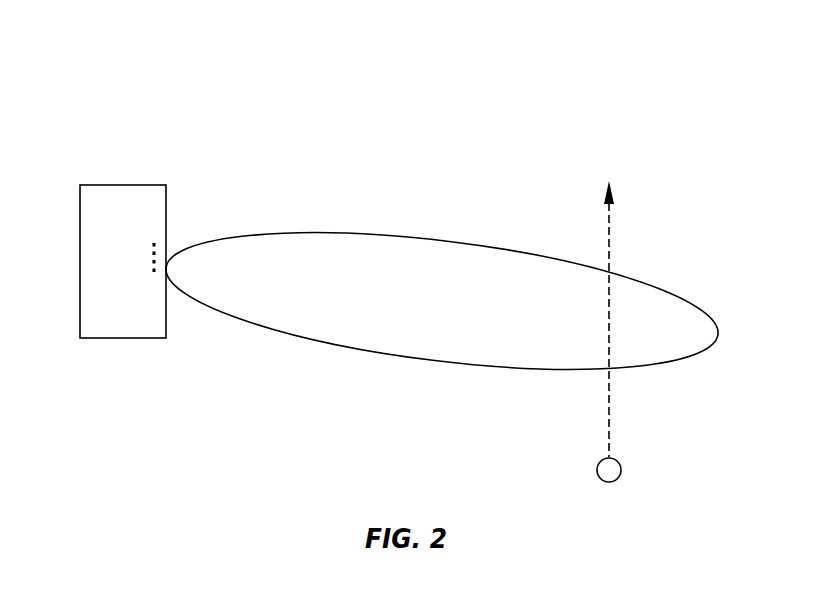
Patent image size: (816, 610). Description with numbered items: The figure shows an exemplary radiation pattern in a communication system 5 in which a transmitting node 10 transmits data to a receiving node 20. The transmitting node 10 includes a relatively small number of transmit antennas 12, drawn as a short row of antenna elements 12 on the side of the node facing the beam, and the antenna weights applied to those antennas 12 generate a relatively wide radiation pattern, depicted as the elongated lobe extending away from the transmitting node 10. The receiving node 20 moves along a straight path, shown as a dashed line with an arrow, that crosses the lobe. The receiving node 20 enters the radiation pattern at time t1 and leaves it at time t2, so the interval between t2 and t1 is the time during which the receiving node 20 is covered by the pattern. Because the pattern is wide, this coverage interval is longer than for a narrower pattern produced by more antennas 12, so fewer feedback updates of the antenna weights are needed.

The communication system 5 is at (527, 93).
The transmitting node 10 is at (104, 268).
The transmit antennas 12 is at (154, 244).
The receiving node 20 is at (617, 479).
The time t1 is at (609, 370).
The time t2 is at (609, 273).